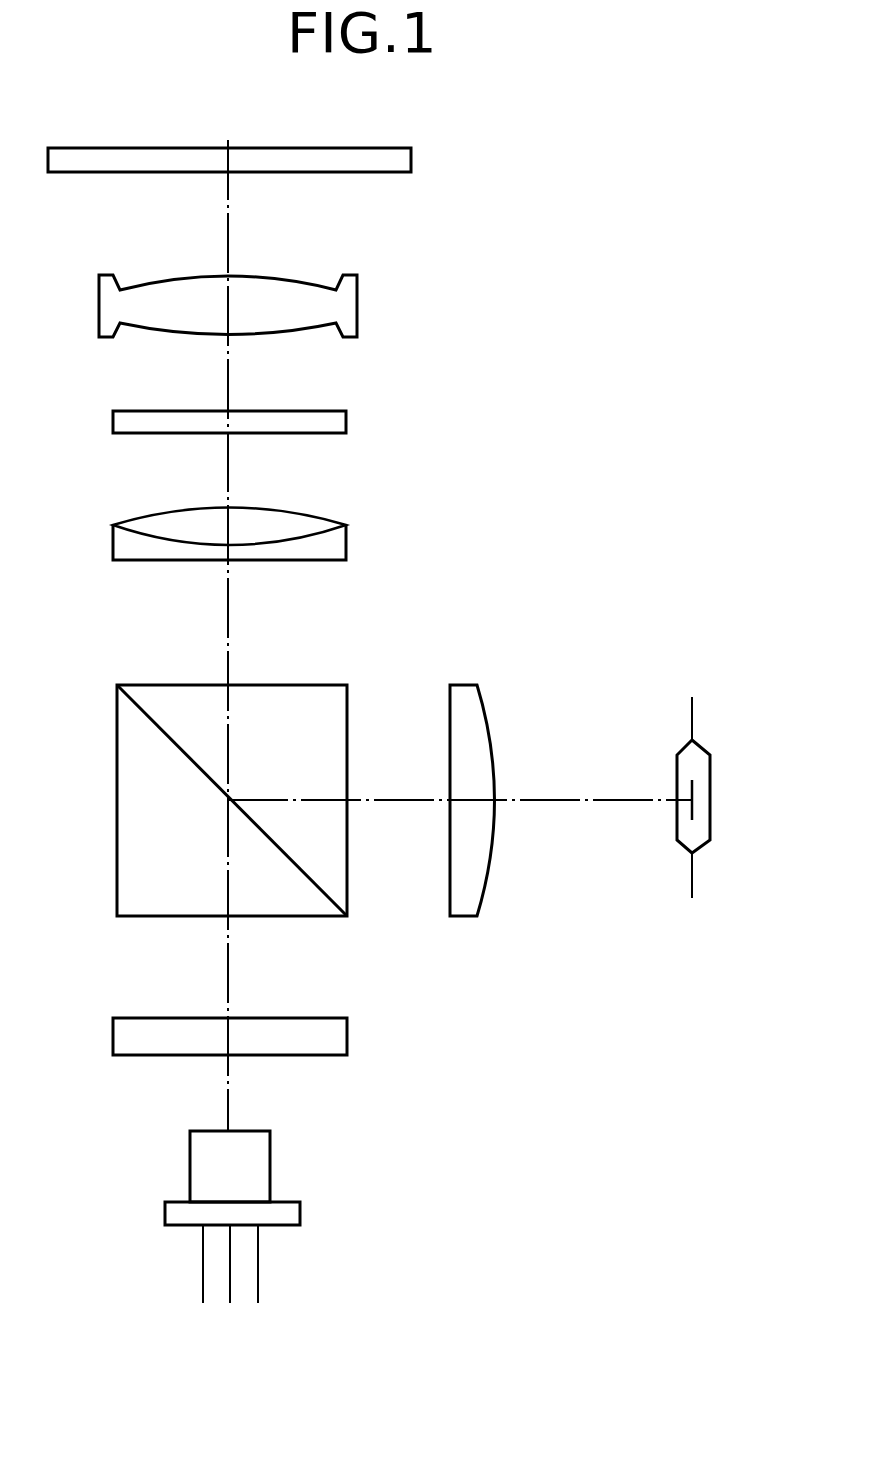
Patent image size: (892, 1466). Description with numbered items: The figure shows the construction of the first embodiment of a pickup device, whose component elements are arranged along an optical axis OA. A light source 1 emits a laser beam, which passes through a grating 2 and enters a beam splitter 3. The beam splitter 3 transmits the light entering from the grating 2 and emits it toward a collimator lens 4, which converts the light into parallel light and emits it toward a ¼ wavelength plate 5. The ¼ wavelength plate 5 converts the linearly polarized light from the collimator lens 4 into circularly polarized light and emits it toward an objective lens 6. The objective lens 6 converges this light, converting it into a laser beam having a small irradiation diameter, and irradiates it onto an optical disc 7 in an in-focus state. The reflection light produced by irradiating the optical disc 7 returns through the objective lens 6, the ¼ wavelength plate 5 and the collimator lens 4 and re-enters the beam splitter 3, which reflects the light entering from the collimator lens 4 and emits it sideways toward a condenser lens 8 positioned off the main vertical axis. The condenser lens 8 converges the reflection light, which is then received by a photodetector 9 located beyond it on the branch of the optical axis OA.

The light source 1 is at (270, 1180).
The grating 2 is at (347, 1037).
The beam splitter 3 is at (320, 685).
The collimator lens 4 is at (346, 548).
The ¼ wavelength plate 5 is at (346, 425).
The objective lens 6 is at (357, 310).
The optical disc 7 is at (411, 166).
The condenser lens 8 is at (464, 685).
The photodetector 9 is at (700, 748).
The optical axis OA is at (229, 972).